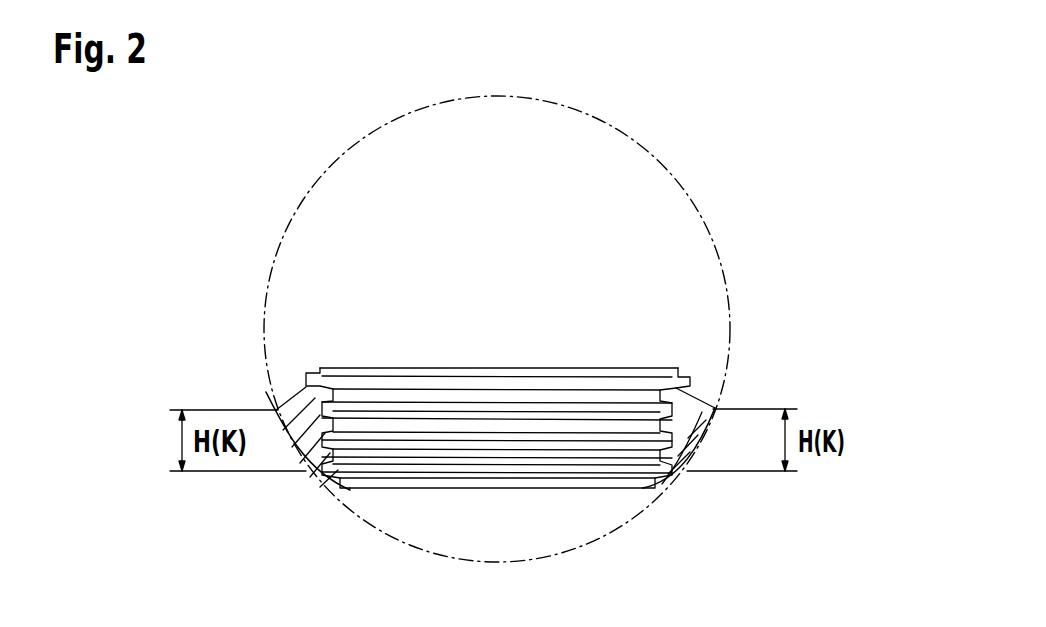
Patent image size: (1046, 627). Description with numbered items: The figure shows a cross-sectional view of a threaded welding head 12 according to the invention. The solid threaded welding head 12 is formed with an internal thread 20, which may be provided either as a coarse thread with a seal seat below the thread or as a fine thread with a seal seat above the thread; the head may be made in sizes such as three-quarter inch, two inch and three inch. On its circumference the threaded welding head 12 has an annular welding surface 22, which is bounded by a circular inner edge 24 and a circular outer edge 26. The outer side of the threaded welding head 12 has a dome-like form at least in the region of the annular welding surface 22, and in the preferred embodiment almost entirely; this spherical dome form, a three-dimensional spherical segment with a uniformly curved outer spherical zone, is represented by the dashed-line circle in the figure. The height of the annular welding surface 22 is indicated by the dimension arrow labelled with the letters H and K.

The threaded welding head 12 is at (293, 440).
The internal thread 20 is at (662, 392).
The annular welding surface 22 is at (698, 442).
The circular inner edge 24 is at (318, 468).
The circular outer edge 26 is at (262, 388).